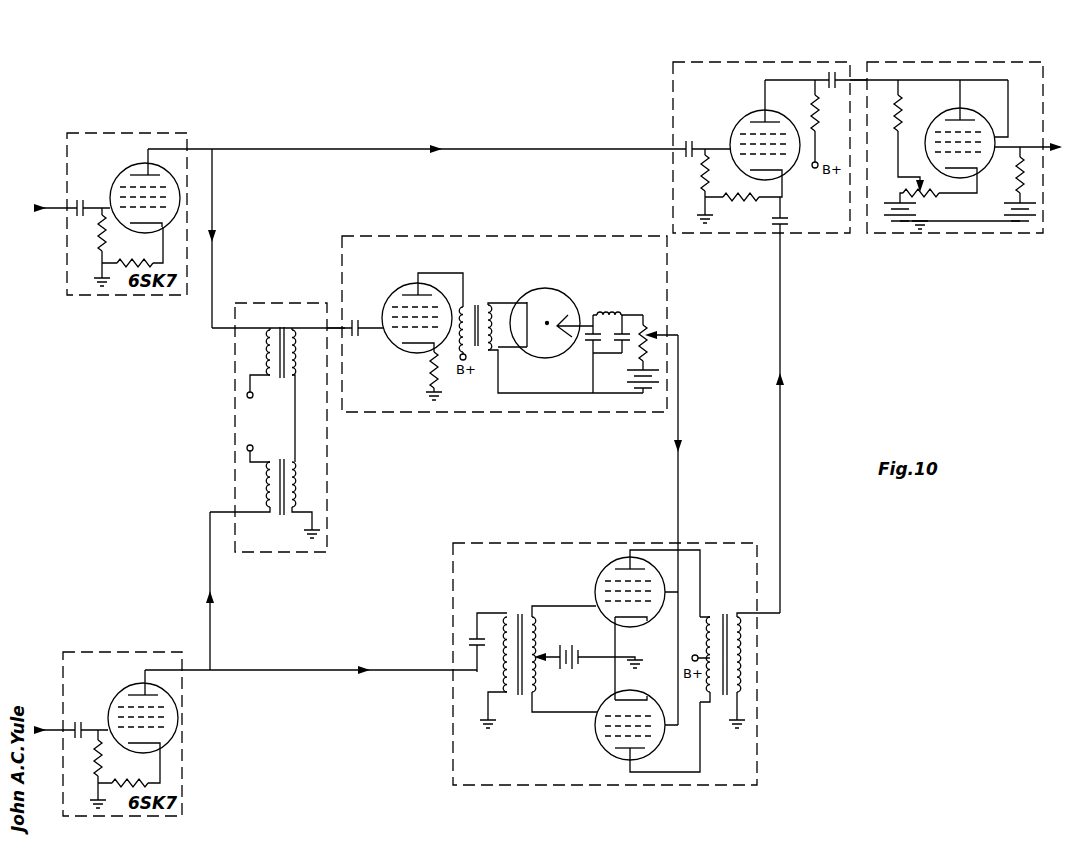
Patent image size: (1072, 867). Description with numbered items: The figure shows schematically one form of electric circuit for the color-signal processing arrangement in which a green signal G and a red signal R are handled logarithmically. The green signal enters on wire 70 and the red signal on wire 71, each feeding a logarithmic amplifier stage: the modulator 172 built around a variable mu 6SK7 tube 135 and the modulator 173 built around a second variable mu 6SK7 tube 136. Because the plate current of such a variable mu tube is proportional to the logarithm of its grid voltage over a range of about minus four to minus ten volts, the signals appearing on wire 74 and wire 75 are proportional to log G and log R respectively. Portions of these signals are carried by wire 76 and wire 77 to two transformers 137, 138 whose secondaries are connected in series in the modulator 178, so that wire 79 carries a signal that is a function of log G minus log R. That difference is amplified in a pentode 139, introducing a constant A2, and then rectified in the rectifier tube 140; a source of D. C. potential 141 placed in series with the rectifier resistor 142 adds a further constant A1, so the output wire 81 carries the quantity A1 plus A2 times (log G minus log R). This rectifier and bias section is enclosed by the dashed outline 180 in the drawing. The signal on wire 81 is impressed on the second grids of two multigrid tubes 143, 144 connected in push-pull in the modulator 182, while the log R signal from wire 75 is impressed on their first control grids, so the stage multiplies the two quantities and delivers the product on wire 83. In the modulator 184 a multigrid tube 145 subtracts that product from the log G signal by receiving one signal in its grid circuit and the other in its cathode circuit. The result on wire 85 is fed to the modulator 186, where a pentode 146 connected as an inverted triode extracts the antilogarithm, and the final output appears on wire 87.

The wire 70 is at (50, 212).
The wire 71 is at (50, 728).
The wire 74 is at (275, 149).
The wire 75 is at (298, 670).
The wire 76 is at (212, 262).
The wire 77 is at (210, 622).
The wire 79 is at (336, 325).
The output wire 81 is at (678, 477).
The wire 83 is at (780, 430).
The output wire 85 is at (850, 80).
The output wire 87 is at (1052, 147).
The variable mu 6SK7 tube 135 is at (128, 172).
The variable mu 6SK7 tube 136 is at (124, 693).
The transformer 137 is at (268, 350).
The transformer 138 is at (268, 488).
The pentode 139 is at (402, 288).
The rectifier tube 140 is at (548, 288).
The source of D. C. potential 141 is at (628, 378).
The rectifier resistor 142 is at (645, 322).
The multigrid tube 143 is at (596, 580).
The multigrid tube 144 is at (598, 745).
The multigrid tube 145 is at (750, 115).
The pentode 146 is at (950, 115).
The modulator 172 is at (110, 133).
The modulator 173 is at (95, 652).
The modulator 178 is at (300, 552).
The modulator unit 180 is at (500, 412).
The modulator 182 is at (580, 543).
The modulator 184 is at (795, 235).
The modulator 186 is at (920, 233).